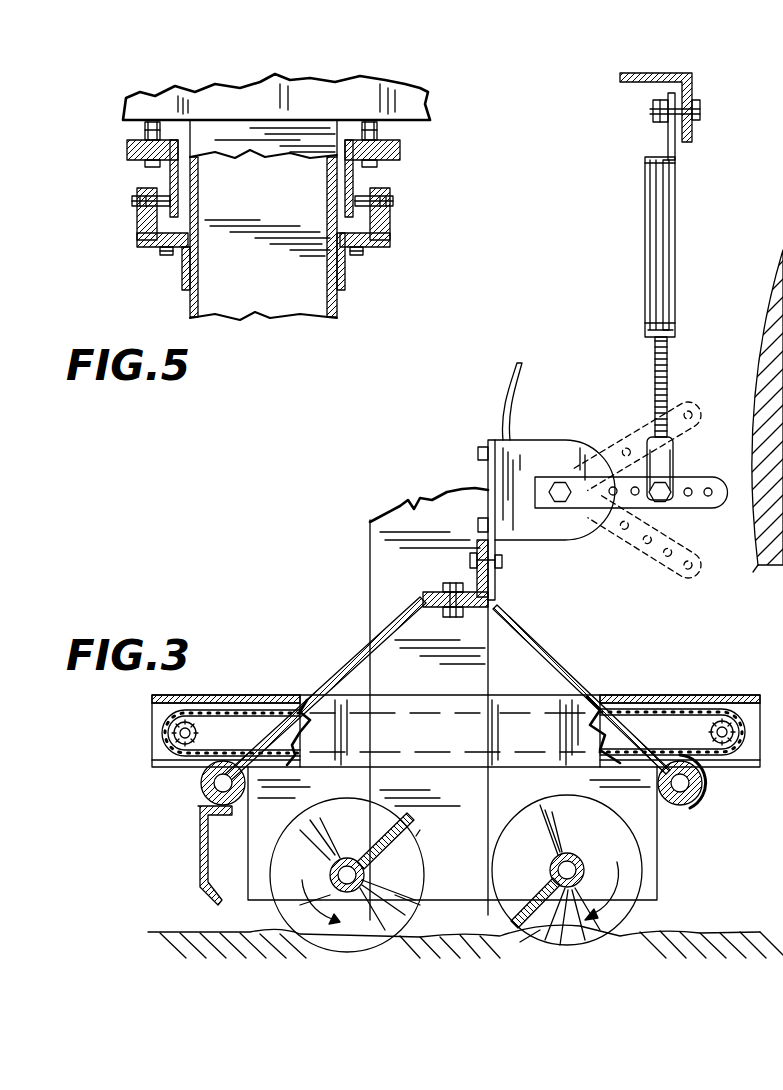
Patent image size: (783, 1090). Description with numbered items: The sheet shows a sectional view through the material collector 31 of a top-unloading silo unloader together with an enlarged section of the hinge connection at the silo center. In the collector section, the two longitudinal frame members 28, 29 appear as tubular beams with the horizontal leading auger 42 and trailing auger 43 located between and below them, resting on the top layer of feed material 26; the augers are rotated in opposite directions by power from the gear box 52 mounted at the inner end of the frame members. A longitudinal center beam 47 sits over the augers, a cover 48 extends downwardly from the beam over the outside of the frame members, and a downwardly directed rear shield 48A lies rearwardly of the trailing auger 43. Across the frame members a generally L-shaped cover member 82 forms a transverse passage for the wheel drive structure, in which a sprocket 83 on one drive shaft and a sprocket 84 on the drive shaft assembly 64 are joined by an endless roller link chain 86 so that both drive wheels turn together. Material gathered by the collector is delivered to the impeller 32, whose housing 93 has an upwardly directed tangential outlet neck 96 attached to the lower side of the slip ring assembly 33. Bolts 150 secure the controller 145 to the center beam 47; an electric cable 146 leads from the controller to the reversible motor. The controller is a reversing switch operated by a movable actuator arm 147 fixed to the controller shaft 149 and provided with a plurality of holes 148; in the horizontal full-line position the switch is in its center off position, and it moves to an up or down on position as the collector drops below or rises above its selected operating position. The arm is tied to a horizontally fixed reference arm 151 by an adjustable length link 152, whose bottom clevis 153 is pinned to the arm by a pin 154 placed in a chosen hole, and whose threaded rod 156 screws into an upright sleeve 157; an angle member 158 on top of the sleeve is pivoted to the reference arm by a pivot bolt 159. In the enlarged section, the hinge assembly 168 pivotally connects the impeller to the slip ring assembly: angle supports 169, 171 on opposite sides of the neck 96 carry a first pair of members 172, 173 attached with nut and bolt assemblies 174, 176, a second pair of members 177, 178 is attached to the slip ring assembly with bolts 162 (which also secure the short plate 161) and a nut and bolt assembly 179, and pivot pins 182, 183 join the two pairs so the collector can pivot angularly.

In FIG. 5, the slip ring assembly 33 is at (428, 94).
In FIG. 5, the tangential outlet neck 96 is at (333, 310).
In FIG. 5, the hinge assembly 168 is at (84, 161).
In FIG. 5, the short plate 161 is at (142, 138).
In FIG. 5, the bolts 162 is at (133, 163).
In FIG. 5, the nut and bolt assembly 179 is at (400, 167).
In FIG. 5, the hinge member 177 is at (178, 185).
In FIG. 5, the hinge member 178 is at (345, 185).
In FIG. 5, the pivot pin 182 is at (132, 201).
In FIG. 5, the pivot pin 183 is at (393, 201).
In FIG. 5, the hinge member 172 is at (137, 221).
In FIG. 5, the hinge member 173 is at (390, 222).
In FIG. 5, the nut and bolt assembly 174 is at (160, 251).
In FIG. 5, the nut and bolt assembly 176 is at (363, 251).
In FIG. 5, the angle support 169 is at (183, 285).
In FIG. 5, the angle support 171 is at (345, 278).
In FIG. 3, the reference arm 151 is at (698, 76).
In FIG. 3, the pivot bolt 159 is at (702, 110).
In FIG. 3, the angle member 158 is at (657, 155).
In FIG. 3, the upright sleeve 157 is at (668, 205).
In FIG. 3, the adjustable length link 152 is at (646, 233).
In FIG. 3, the threaded rod 156 is at (670, 347).
In FIG. 3, the bottom clevis 153 is at (650, 447).
In FIG. 3, the actuator arm 147 is at (700, 390).
In FIG. 3, the electric cable 146 is at (520, 377).
In FIG. 3, the controller 145 is at (542, 450).
In FIG. 3, the impeller 32 is at (413, 498).
In FIG. 3, the controller shaft 149 is at (561, 506).
In FIG. 3, the holes 148 is at (708, 497).
In FIG. 3, the center beam 47 is at (477, 580).
In FIG. 3, the bolts 150 is at (503, 563).
In FIG. 3, the pin 154 is at (650, 527).
In FIG. 3, the housing 93 is at (373, 593).
In FIG. 3, the cover 48 is at (345, 663).
In FIG. 3, the material collector 31 is at (290, 682).
In FIG. 3, the endless roller link chain 86 is at (246, 710).
In FIG. 3, the drive shaft assembly 64 is at (180, 733).
In FIG. 3, the sprocket 84 is at (177, 743).
In FIG. 3, the frame member 29 is at (196, 793).
In FIG. 3, the rear shield 48A is at (200, 857).
In FIG. 3, the gear box 52 is at (452, 833).
In FIG. 3, the trailing auger 43 is at (413, 827).
In FIG. 3, the leading auger 42 is at (538, 823).
In FIG. 3, the frame member 28 is at (668, 800).
In FIG. 3, the cover member 82 is at (648, 694).
In FIG. 3, the sprocket 83 is at (713, 722).
In FIG. 3, the feed material 26 is at (680, 930).